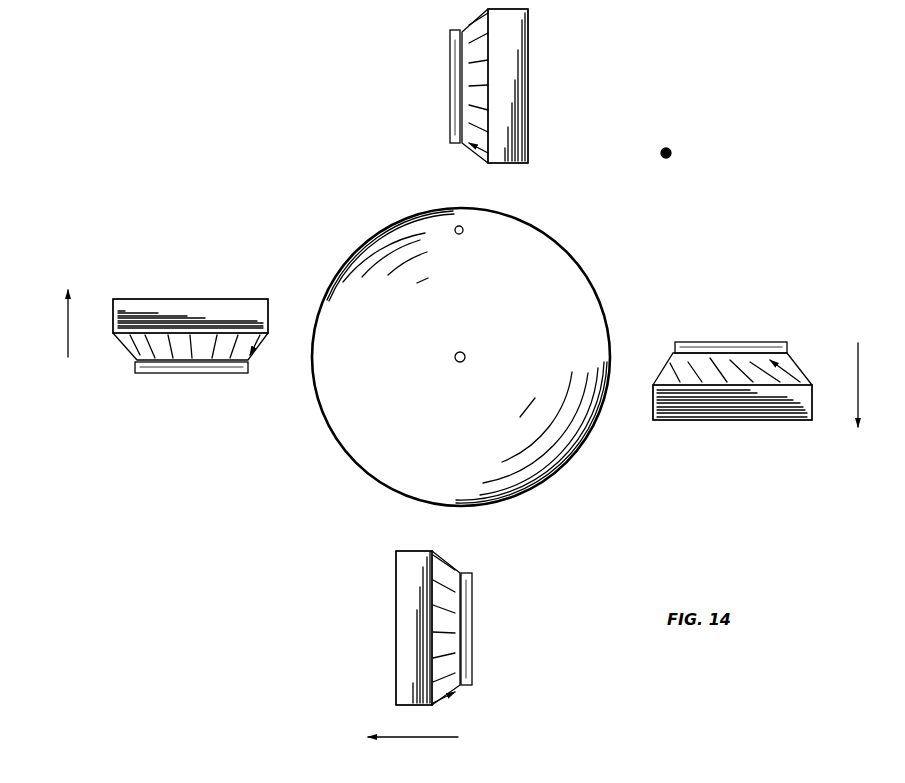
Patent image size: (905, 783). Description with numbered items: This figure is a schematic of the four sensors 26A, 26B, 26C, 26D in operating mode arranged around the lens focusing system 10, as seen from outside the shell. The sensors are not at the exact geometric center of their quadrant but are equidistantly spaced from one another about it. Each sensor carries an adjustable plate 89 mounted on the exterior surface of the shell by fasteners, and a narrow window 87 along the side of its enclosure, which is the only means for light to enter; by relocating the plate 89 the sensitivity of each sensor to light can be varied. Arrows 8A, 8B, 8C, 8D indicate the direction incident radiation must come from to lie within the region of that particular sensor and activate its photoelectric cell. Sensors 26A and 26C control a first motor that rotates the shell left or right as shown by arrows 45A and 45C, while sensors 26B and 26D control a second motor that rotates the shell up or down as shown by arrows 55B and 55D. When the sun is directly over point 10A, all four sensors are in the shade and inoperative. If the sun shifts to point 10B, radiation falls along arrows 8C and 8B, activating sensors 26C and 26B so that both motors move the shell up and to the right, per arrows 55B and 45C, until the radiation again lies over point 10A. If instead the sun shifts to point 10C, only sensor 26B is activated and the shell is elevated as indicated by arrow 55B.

The lens focusing system 10 is at (571, 255).
The point 10A is at (463, 365).
The point 10B is at (680, 153).
The point 10C is at (463, 237).
The sensor 26A is at (369, 620).
The sensor 26B is at (161, 347).
The sensor 26C is at (404, 103).
The sensor 26D is at (732, 309).
The arrow 8A is at (453, 570).
The arrow 8B is at (123, 343).
The arrow 8C is at (475, 153).
The arrow 8D is at (667, 373).
The narrow window 87 is at (448, 118).
The adjustable plate 89 is at (531, 100).
The arrow 45A is at (458, 737).
The arrow 45C is at (441, 0).
The arrow 55B is at (68, 345).
The arrow 55D is at (858, 400).